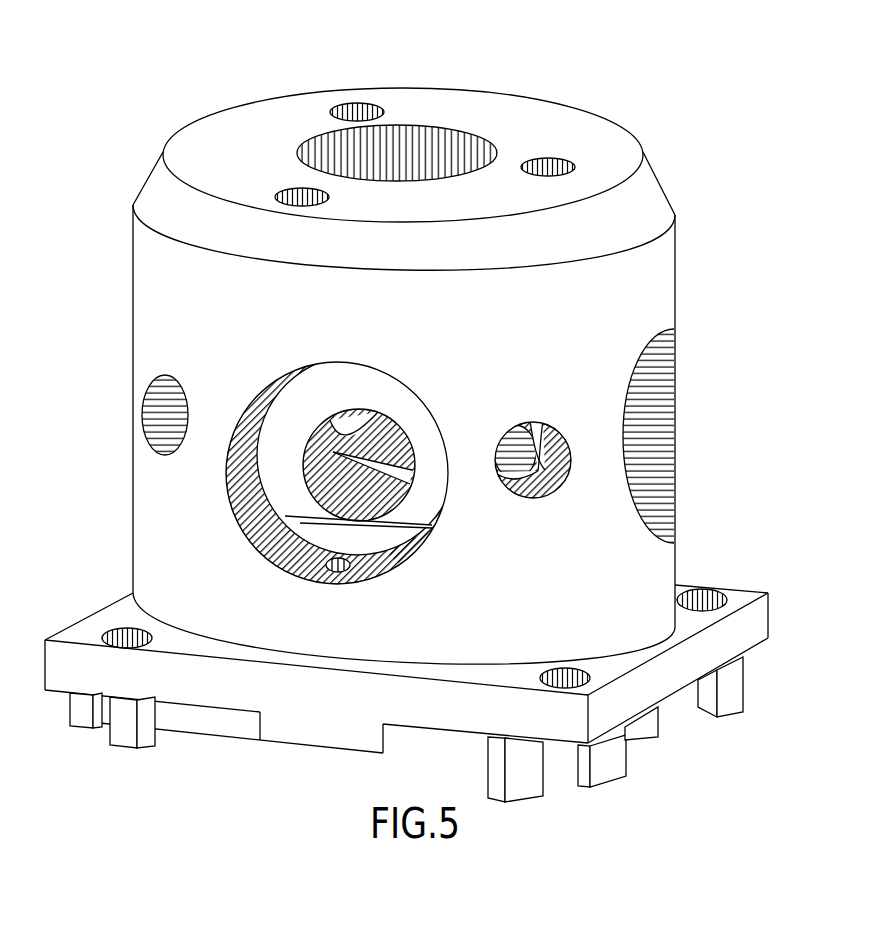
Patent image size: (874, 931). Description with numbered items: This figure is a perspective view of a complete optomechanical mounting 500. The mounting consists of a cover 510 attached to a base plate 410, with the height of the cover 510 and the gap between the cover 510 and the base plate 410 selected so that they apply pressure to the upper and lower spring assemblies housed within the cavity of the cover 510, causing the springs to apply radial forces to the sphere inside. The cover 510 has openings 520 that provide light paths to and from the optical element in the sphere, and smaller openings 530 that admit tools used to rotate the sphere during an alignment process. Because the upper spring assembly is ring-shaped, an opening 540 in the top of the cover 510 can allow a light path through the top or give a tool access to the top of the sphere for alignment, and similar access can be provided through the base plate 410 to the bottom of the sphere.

The optomechanical mounting 500 is at (171, 102).
The cover 510 is at (663, 271).
The openings 520 is at (672, 411).
The openings 530 is at (146, 416).
The opening 540 is at (437, 135).
The base plate 410 is at (757, 630).